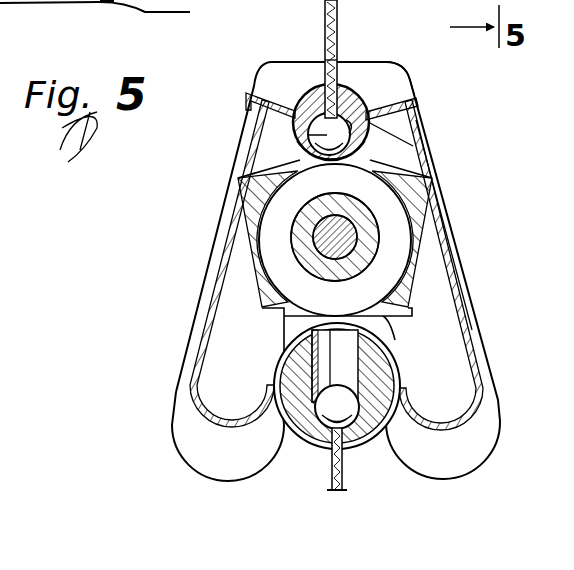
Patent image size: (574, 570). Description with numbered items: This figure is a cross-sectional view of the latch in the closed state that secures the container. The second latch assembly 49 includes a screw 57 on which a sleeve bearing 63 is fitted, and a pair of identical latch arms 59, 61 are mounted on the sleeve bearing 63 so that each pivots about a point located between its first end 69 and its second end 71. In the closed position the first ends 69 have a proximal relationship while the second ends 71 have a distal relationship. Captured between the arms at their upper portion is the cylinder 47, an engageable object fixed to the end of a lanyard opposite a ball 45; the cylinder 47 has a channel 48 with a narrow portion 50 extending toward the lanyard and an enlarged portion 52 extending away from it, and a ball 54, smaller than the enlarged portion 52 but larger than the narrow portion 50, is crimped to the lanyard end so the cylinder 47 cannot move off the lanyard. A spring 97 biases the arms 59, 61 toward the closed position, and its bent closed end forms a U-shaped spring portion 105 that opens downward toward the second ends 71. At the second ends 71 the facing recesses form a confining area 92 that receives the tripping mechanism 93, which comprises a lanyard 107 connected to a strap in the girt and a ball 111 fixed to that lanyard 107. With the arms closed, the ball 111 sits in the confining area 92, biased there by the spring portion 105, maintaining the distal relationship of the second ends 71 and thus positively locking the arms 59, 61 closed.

The ball 45 is at (338, 22).
The cylinder 47 is at (345, 98).
The channel 48 is at (344, 70).
The second latch assembly 49 is at (455, 151).
The narrow portion 50 is at (325, 88).
The enlarged portion 52 is at (367, 112).
The ball 54 is at (318, 135).
The screw 57 is at (332, 232).
The latch arm 59 is at (259, 80).
The latch arm 61 is at (388, 72).
The sleeve bearing 63 is at (370, 243).
The first end 69 is at (257, 54).
The second end 71 is at (175, 384).
The confining area 92 is at (266, 433).
The tripping mechanism 93 is at (363, 451).
The spring 97 is at (467, 287).
The spring portion 105 is at (270, 346).
The lanyard 107 is at (331, 462).
The ball 111 is at (375, 375).